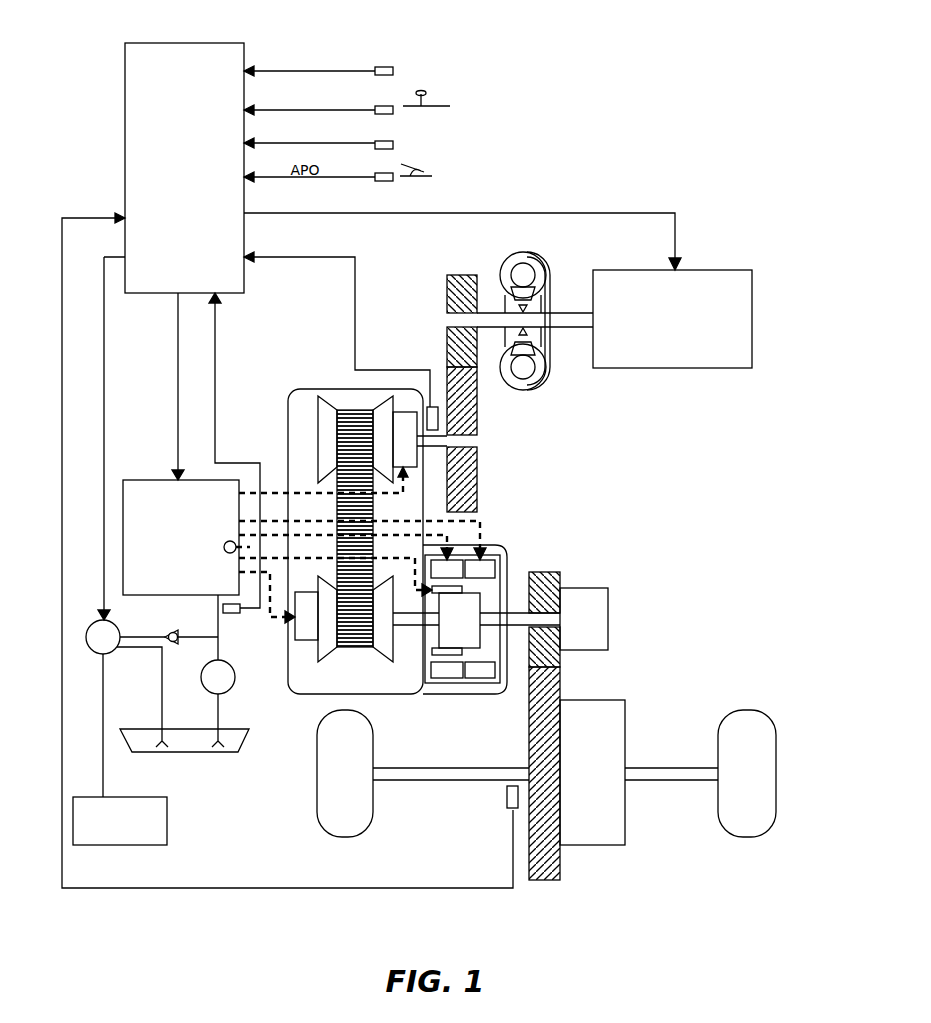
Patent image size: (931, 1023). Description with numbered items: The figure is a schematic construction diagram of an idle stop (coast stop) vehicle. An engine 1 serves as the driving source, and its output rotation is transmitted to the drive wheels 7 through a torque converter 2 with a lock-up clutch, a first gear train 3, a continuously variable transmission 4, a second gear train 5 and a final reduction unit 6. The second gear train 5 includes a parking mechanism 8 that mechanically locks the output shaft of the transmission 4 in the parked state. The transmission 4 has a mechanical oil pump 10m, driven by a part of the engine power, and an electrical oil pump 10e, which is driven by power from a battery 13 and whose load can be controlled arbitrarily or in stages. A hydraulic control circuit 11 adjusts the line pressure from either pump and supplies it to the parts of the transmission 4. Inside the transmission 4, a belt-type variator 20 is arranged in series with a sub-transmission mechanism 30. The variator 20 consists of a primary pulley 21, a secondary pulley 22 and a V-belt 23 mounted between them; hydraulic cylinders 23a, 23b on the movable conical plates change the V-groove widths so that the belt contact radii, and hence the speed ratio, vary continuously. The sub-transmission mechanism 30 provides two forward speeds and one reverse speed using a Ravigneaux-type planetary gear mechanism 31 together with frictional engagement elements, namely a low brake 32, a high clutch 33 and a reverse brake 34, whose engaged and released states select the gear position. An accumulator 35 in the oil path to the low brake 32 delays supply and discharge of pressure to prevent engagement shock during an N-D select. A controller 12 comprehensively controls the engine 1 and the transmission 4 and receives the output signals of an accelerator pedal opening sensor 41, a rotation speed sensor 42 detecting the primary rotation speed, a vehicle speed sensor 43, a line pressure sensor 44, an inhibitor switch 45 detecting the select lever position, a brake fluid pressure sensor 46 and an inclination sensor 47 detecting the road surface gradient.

The engine 1 is at (740, 275).
The torque converter 2 is at (550, 282).
The first gear train 3 is at (458, 265).
The transmission 4 is at (325, 388).
The second gear train 5 is at (547, 892).
The final reduction unit 6 is at (592, 843).
The drive wheels 7 is at (350, 834).
The parking mechanism 8 is at (594, 610).
The electrical oil pump 10e is at (105, 650).
The mechanical oil pump 10m is at (229, 686).
The hydraulic control circuit 11 is at (140, 483).
The controller 12 is at (234, 52).
The battery 13 is at (158, 834).
The variator 20 is at (298, 410).
The primary pulley 21 is at (330, 440).
The secondary pulley 22 is at (328, 634).
The V-belt 23 is at (357, 410).
The hydraulic cylinder 23a is at (400, 420).
The hydraulic cylinder 23b is at (300, 638).
The sub-transmission mechanism 30 is at (507, 556).
The Ravigneaux-type planetary gear mechanism 31 is at (462, 615).
The low brake 32 is at (449, 568).
The high clutch 33 is at (447, 655).
The reverse brake 34 is at (481, 570).
The accumulator 35 is at (226, 553).
The accelerator pedal opening sensor 41 is at (383, 181).
The rotation speed sensor 42 is at (432, 404).
The vehicle speed sensor 43 is at (505, 800).
The line pressure sensor 44 is at (232, 614).
The inhibitor switch 45 is at (388, 106).
The brake fluid pressure sensor 46 is at (378, 149).
The inclination sensor 47 is at (388, 67).